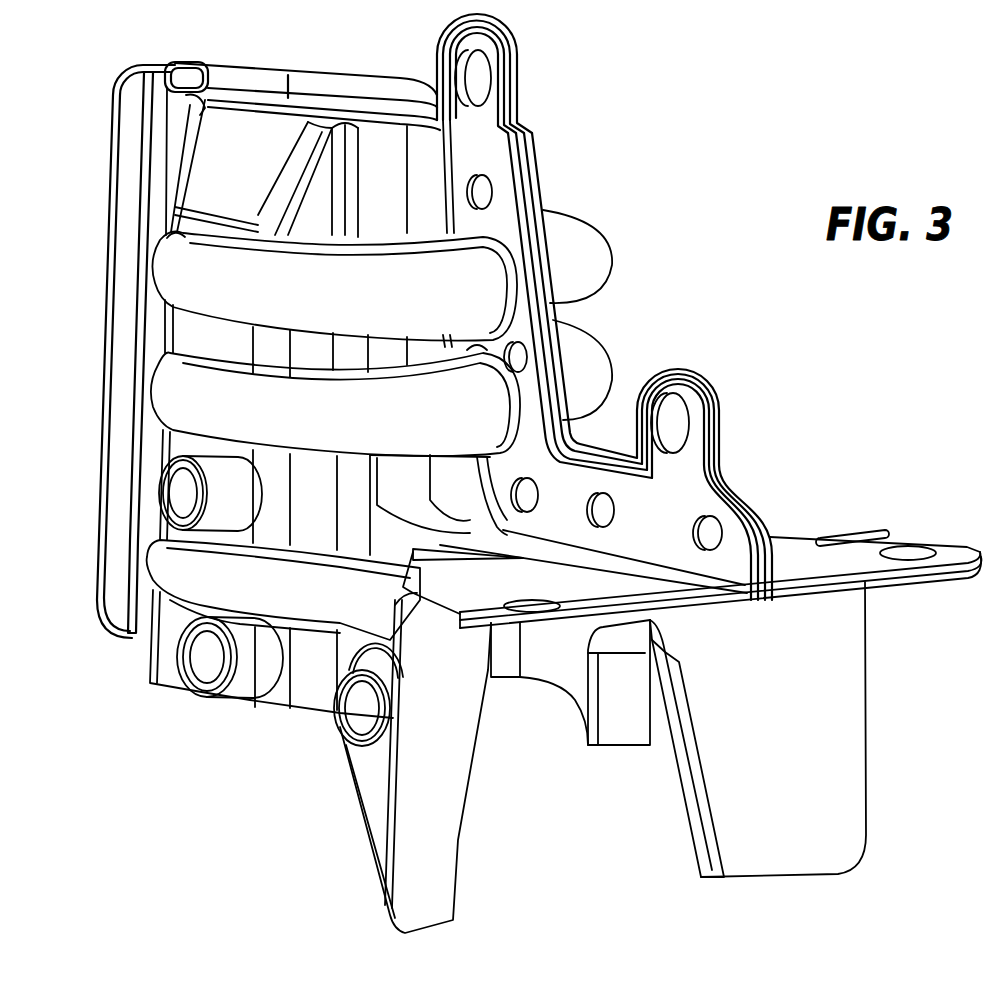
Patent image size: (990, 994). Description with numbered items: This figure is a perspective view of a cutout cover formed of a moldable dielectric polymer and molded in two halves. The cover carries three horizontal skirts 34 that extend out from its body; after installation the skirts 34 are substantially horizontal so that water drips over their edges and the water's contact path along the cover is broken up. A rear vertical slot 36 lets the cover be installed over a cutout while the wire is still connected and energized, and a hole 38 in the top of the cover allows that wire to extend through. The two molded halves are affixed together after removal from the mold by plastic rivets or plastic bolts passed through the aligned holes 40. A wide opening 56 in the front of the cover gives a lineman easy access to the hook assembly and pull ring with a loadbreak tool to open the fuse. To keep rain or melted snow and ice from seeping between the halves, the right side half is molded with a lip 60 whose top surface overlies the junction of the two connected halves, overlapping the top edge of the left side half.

The horizontal skirts 34 is at (157, 233).
The rear vertical slot 36 is at (163, 60).
The hole 38 is at (270, 78).
The aligned holes 40 is at (495, 196).
The wide opening 56 is at (527, 774).
The lip 60 is at (617, 445).